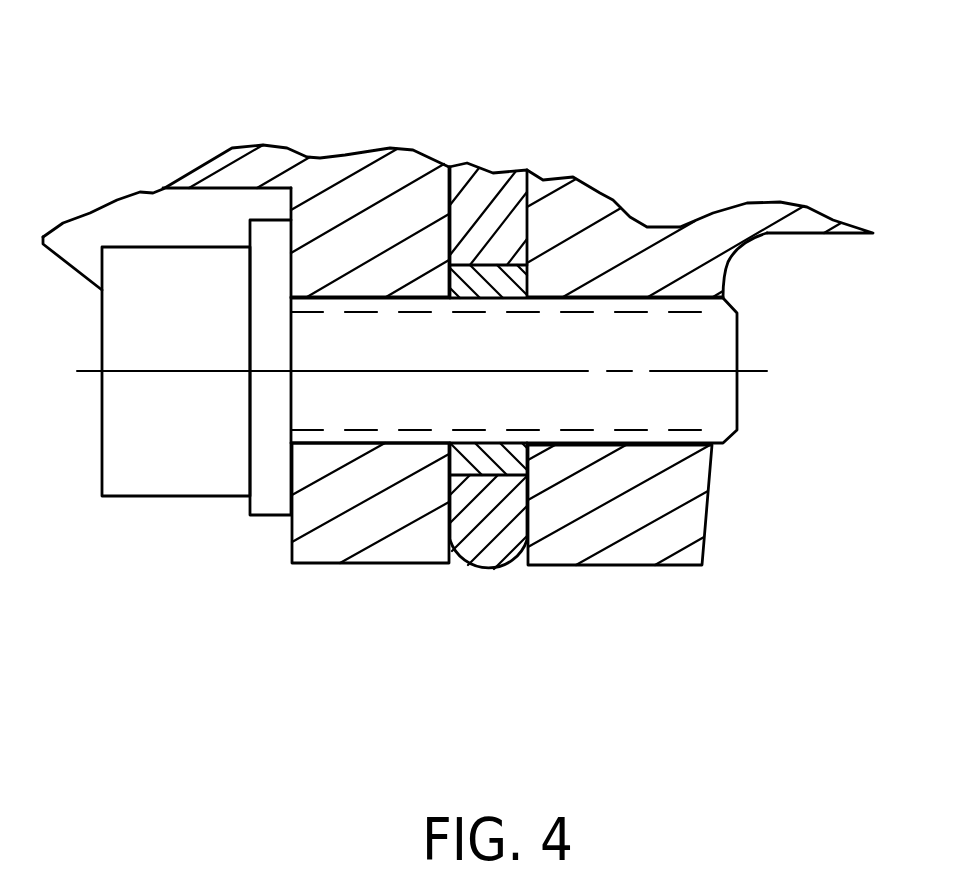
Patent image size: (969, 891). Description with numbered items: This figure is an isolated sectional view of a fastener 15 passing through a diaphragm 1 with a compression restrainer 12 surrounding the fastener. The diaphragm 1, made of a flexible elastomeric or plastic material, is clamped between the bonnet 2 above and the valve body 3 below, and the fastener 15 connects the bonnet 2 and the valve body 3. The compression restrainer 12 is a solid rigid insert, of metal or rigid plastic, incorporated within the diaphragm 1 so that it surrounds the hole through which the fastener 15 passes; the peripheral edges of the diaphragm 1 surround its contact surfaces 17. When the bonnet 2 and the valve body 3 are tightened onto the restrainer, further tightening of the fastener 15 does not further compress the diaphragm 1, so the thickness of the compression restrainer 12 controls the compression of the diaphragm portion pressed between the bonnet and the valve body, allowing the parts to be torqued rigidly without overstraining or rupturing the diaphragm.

The diaphragm 1 is at (477, 540).
The bonnet 2 is at (642, 540).
The valve body 3 is at (333, 537).
The compression restrainer 12 is at (472, 460).
The fastener 15 is at (688, 398).
The contact surfaces 17 is at (490, 263).